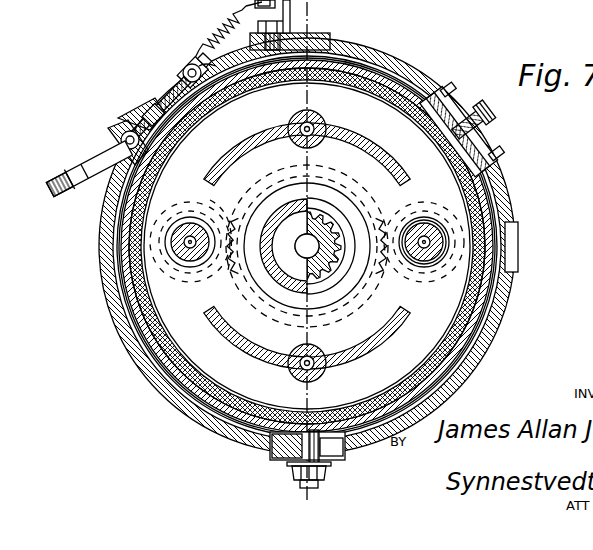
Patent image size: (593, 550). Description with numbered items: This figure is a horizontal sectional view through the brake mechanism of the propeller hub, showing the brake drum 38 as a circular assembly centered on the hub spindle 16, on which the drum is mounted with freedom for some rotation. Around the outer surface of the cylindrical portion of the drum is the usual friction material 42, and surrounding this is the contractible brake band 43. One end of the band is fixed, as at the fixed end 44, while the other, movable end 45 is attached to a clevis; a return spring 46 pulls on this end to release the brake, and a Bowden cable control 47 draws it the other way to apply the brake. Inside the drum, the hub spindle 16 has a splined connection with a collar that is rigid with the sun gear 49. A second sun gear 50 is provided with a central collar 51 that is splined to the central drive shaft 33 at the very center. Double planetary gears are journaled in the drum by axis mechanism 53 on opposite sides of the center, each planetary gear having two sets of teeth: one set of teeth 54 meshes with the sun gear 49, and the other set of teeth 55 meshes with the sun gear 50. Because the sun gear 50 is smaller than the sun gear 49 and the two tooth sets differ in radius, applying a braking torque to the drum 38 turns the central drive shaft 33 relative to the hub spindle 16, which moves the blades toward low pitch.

The hub spindle 16 is at (279, 205).
The central drive shaft 33 is at (318, 230).
The brake drum 38 is at (452, 345).
The friction material 42 is at (486, 299).
The contractible brake band 43 is at (388, 66).
The fixed end of brake band 44 is at (120, 166).
The movable end of brake band 45 is at (186, 72).
The return spring 46 is at (203, 42).
The Bowden cable control 47 is at (150, 110).
The sun gear 49 is at (222, 214).
The second sun gear 50 is at (385, 217).
The central collar 51 is at (322, 267).
The axis mechanism 53 is at (189, 262).
The planetary gear teeth 54 is at (231, 268).
The planetary gear teeth 55 is at (424, 230).